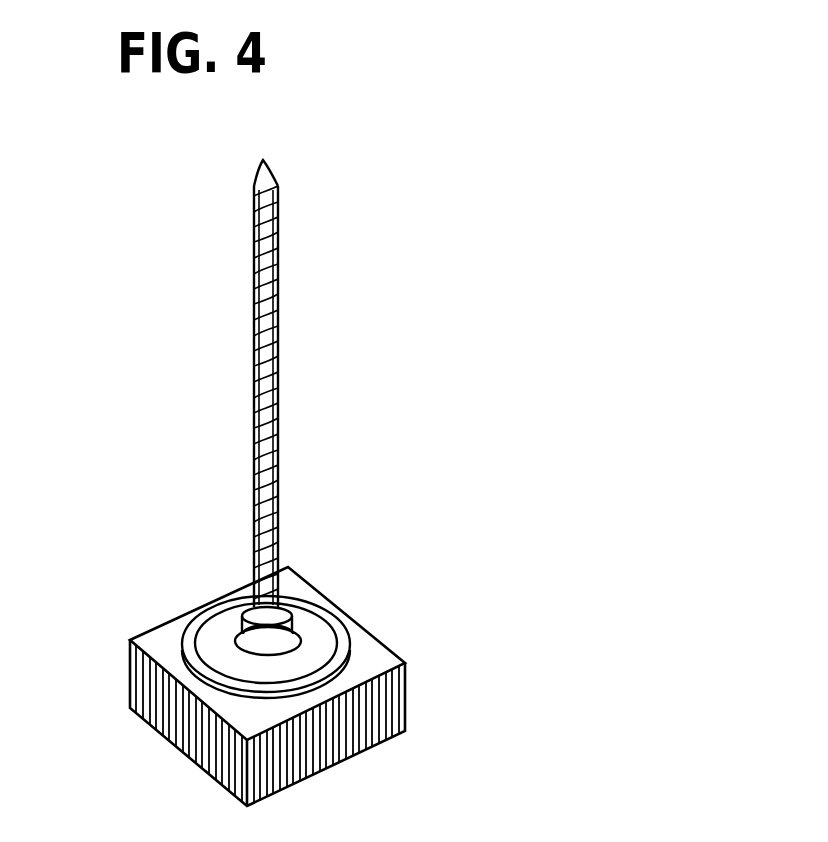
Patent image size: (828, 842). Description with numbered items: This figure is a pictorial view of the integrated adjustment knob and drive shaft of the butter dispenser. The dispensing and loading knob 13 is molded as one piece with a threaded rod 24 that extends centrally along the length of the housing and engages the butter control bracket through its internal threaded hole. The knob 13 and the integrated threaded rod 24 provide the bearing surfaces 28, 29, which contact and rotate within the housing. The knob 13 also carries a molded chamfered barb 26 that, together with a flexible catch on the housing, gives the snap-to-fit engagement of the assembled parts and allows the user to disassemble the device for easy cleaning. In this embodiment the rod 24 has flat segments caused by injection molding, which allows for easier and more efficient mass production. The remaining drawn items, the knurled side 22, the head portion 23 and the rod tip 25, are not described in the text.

The dispensing and loading knob 13 is at (410, 690).
The knurled side surface 22 is at (128, 672).
The screw head top 23 is at (278, 598).
The threaded rod 24 is at (273, 325).
The screw tip 25 is at (270, 170).
The chamfered barb 26 is at (282, 614).
The bearing surface 28 is at (241, 630).
The bearing surface 29 is at (332, 633).